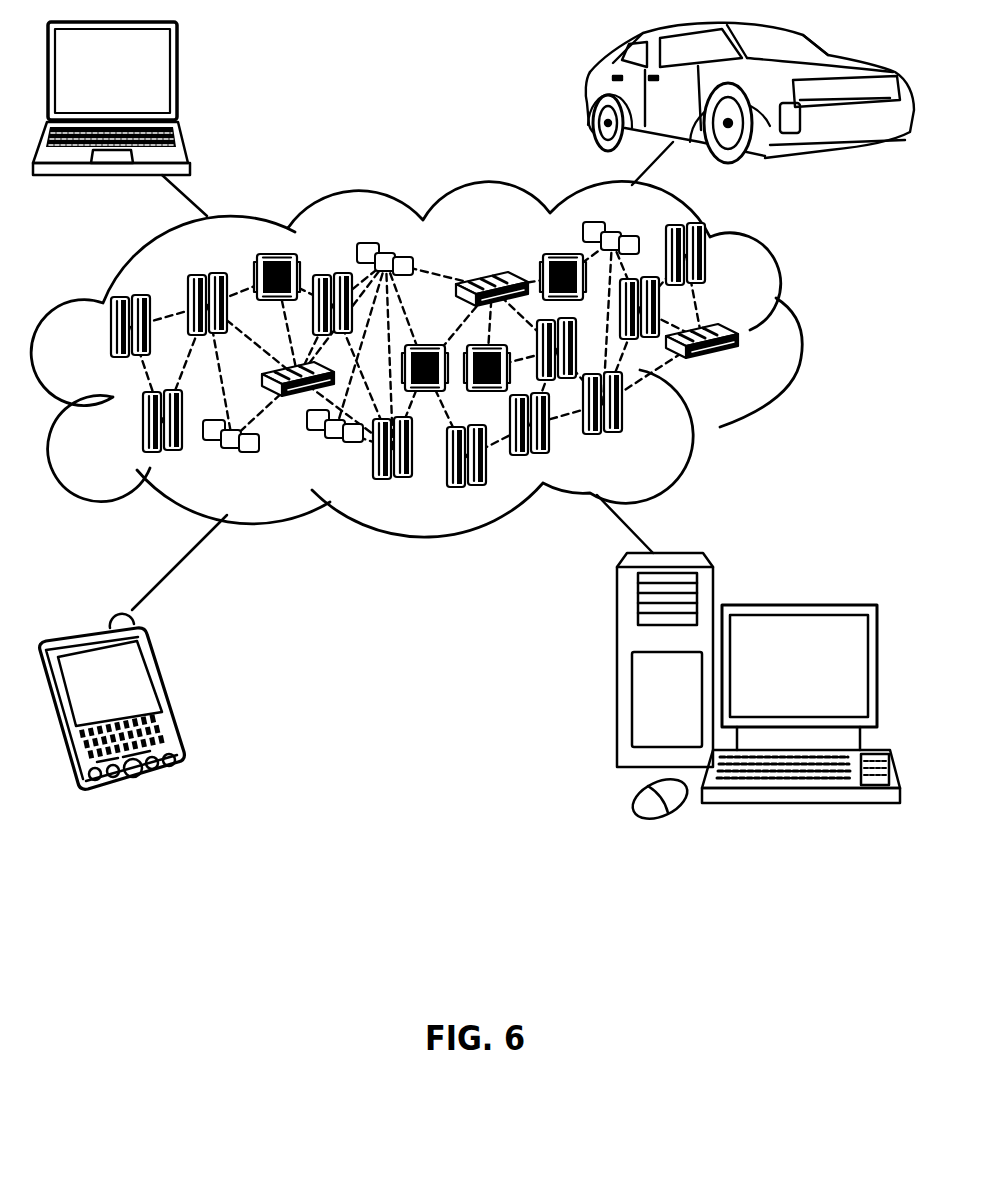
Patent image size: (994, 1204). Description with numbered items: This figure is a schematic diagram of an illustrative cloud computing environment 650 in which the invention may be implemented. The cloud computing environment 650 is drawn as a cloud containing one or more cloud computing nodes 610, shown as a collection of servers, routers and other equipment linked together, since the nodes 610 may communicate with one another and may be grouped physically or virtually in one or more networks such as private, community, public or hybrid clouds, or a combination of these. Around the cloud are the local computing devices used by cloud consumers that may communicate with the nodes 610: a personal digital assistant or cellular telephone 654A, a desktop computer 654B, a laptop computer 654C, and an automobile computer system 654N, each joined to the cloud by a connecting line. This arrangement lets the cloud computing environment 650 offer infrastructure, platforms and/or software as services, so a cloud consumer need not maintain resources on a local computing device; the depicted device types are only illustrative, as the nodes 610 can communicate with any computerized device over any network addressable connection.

The cloud computing nodes 610 is at (495, 349).
The cloud computing environment 650 is at (798, 334).
The personal digital assistant (PDA) or cellular telephone 654A is at (166, 697).
The desktop computer 654B is at (795, 605).
The laptop computer 654C is at (178, 80).
The automobile computer system 654N is at (587, 95).